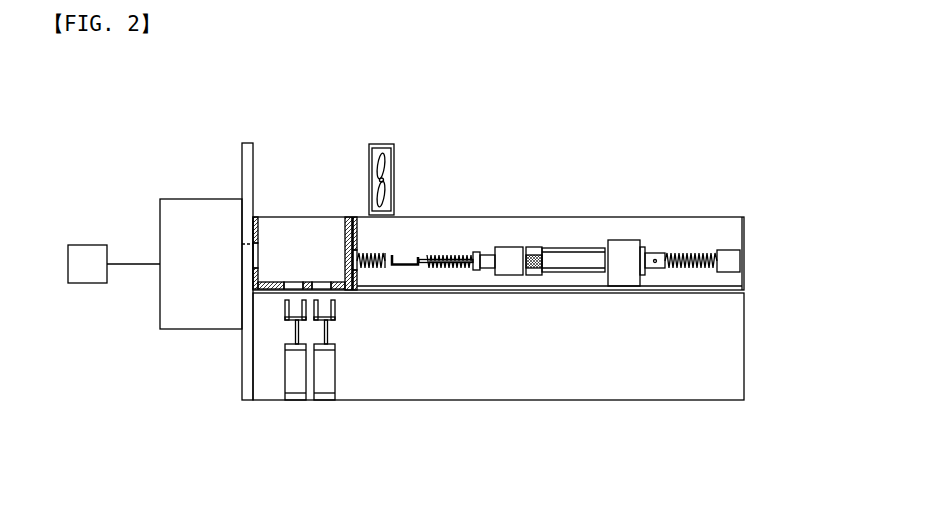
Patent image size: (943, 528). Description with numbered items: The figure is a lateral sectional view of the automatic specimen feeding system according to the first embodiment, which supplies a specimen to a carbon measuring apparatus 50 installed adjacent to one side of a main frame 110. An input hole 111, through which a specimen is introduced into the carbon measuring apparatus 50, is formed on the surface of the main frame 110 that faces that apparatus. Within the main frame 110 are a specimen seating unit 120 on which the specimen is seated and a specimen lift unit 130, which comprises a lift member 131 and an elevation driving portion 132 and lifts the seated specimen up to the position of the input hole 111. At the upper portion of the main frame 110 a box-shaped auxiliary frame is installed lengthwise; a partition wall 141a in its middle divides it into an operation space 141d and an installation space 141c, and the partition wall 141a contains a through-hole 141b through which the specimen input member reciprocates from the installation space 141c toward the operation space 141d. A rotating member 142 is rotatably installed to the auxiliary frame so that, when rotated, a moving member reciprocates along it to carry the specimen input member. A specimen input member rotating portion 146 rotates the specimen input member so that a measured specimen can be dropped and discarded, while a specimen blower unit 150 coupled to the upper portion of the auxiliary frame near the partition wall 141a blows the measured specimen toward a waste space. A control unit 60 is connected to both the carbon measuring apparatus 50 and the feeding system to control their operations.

The carbon measuring apparatus 50 is at (185, 199).
The control unit 60 is at (87, 245).
The main frame 110 is at (253, 165).
The input hole 111 is at (247, 258).
The specimen seating unit 120 is at (268, 291).
The specimen lift unit 130 is at (279, 399).
The lift member 131 is at (267, 403).
The elevation driving portion 132 is at (311, 381).
The partition wall 141a is at (358, 280).
The through-hole 141b is at (357, 270).
The installation space 141c is at (468, 231).
The operation space 141d is at (326, 240).
The rotating member 142 is at (672, 254).
The specimen input member rotating portion 146 is at (725, 236).
The specimen blower unit 150 is at (388, 144).